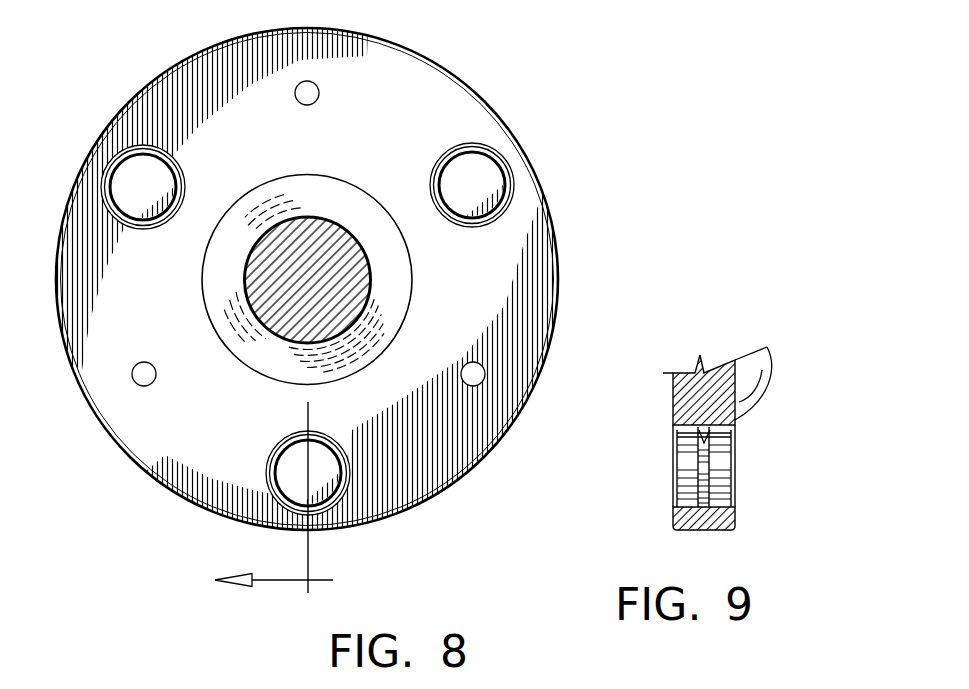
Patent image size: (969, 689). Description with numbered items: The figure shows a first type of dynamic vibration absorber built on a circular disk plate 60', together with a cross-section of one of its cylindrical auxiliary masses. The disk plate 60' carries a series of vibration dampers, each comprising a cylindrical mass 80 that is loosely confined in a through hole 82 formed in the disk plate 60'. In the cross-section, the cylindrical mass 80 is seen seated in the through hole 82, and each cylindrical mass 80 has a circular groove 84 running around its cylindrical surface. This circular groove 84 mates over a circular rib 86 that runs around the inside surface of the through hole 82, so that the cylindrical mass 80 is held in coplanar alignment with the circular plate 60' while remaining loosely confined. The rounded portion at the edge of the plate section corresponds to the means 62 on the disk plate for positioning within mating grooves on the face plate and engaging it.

In FIG. 8, the circular disk plate 60' is at (307, 312).
In FIG. 9, the circular disk plate 60' is at (677, 389).
In FIG. 8, the cylindrical mass 80 is at (467, 173).
In FIG. 9, the cylindrical mass 80 is at (673, 467).
In FIG. 8, the through hole 82 is at (510, 167).
In FIG. 9, the means for positioning 62 is at (771, 380).
In FIG. 9, the circular groove 84 is at (703, 468).
In FIG. 9, the circular rib 86 is at (710, 447).